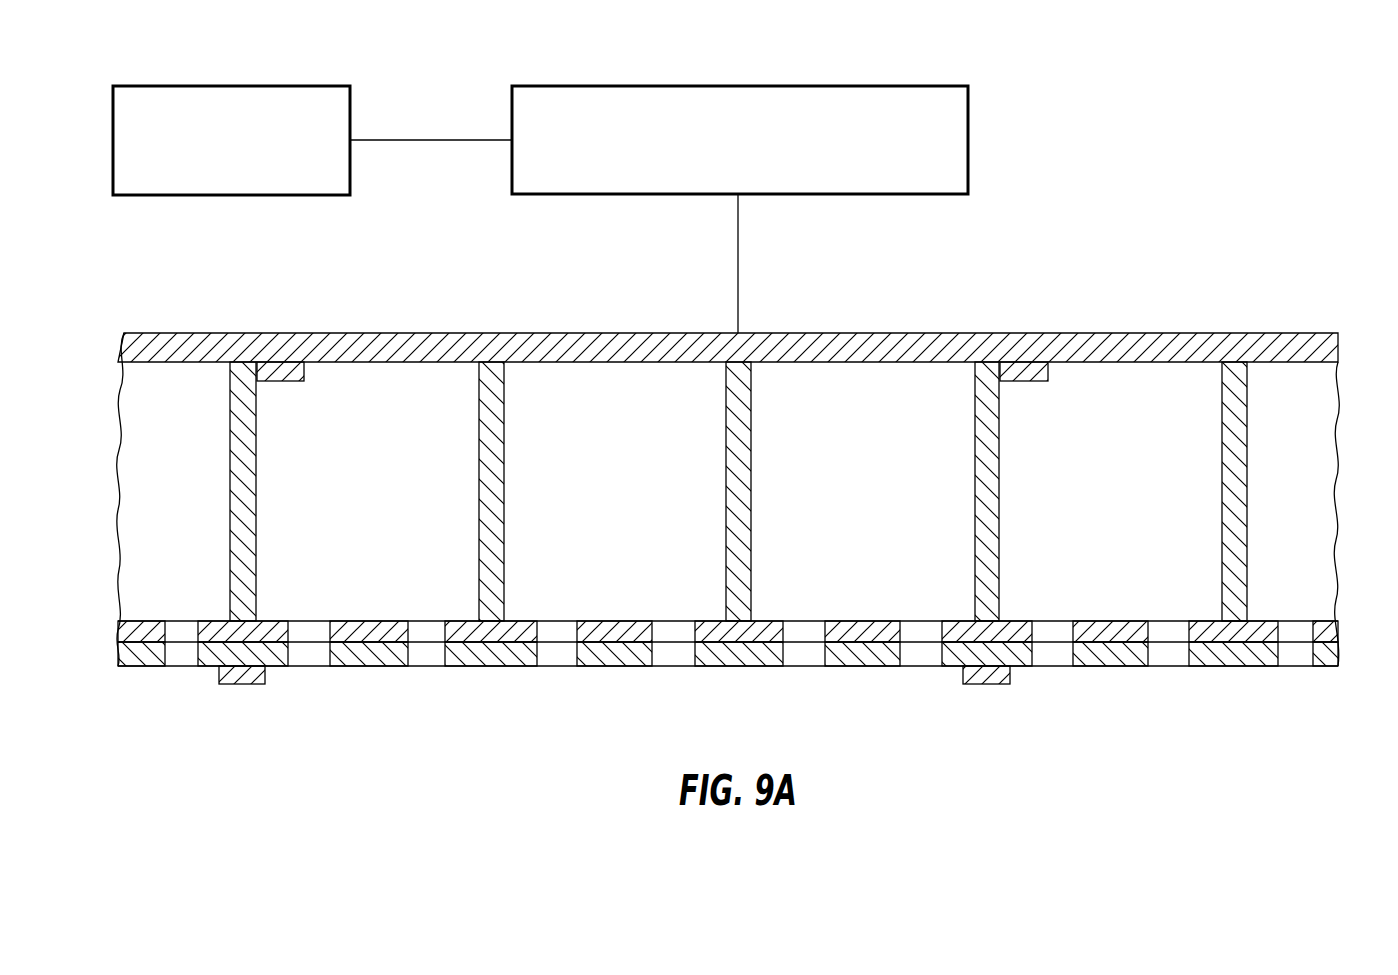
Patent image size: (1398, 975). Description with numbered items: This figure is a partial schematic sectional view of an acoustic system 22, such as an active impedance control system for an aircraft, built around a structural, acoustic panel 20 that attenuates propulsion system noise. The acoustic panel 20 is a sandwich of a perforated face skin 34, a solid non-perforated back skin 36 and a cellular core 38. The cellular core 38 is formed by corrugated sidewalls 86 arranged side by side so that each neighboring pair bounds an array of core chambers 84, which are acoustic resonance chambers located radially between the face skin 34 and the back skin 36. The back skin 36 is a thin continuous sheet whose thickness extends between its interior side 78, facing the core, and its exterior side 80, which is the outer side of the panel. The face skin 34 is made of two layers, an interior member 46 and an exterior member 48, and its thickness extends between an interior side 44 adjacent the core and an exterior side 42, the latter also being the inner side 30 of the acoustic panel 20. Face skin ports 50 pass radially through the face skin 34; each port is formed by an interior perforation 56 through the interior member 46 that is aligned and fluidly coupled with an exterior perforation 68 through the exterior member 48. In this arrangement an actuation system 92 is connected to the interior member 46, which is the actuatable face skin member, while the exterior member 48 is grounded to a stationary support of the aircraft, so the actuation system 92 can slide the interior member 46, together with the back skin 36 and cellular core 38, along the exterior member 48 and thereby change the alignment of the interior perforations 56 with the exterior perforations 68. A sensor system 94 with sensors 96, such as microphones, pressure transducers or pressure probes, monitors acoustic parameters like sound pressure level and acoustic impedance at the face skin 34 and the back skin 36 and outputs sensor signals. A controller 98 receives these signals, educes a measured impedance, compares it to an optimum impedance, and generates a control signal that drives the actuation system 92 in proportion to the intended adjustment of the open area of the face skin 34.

The acoustic panel 20 is at (1316, 282).
The acoustic system 22 is at (1316, 74).
The inner side 30 is at (728, 674).
The face skin 34 is at (682, 672).
The back skin 36 is at (682, 328).
The cellular core 38 is at (100, 478).
The exterior side 42 is at (201, 666).
The interior side 44 is at (214, 621).
The interior member 46 is at (1112, 620).
The exterior member 48 is at (1112, 668).
The face skin ports 50 is at (436, 674).
The interior perforations 56 is at (560, 623).
The exterior perforations 68 is at (560, 664).
The interior side 78 is at (400, 362).
The exterior side 80 is at (404, 333).
The core chambers 84 is at (352, 504).
The corrugated sidewalls 86 is at (256, 445).
The actuation system 92 is at (968, 139).
The sensor system 94 is at (252, 690).
The sensors 96 is at (304, 372).
The controller 98 is at (113, 137).